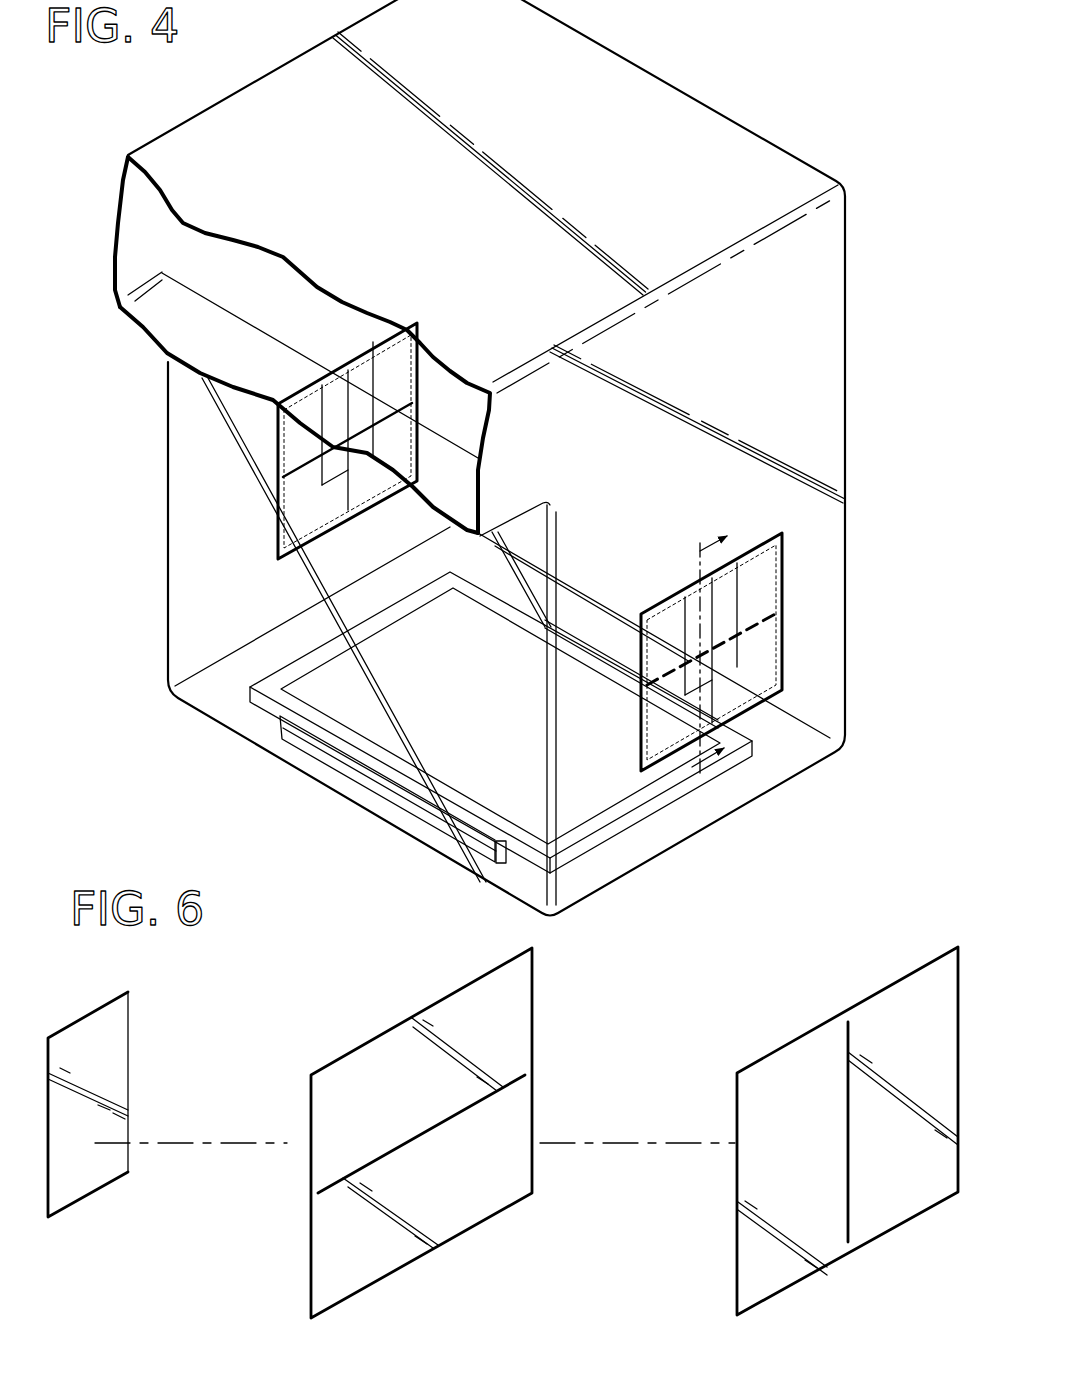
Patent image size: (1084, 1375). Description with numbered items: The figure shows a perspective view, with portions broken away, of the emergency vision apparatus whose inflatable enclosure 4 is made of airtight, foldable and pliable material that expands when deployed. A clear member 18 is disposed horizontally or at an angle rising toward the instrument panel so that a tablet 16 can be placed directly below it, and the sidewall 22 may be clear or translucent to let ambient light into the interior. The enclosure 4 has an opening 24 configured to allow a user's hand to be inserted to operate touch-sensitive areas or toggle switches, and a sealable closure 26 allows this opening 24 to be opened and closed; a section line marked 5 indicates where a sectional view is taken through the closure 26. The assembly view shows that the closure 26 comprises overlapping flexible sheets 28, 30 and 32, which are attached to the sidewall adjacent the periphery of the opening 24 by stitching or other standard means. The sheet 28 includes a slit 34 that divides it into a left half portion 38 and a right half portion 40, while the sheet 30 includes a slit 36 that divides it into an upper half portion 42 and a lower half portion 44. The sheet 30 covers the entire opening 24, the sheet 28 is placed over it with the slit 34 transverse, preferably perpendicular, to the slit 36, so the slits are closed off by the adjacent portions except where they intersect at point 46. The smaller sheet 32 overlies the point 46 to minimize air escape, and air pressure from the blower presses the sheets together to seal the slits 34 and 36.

In FIG. 4, the inflatable enclosure 4 is at (738, 109).
In FIG. 4, the section line 5- 5 is at (721, 657).
In FIG. 4, the tablet 16 is at (630, 842).
In FIG. 4, the clear member 18 is at (776, 760).
In FIG. 4, the sidewall 22 is at (772, 336).
In FIG. 4, the opening 24 is at (765, 563).
In FIG. 4, the sealable closure 26 is at (268, 444).
In FIG. 6, the flexible sheet 28 is at (802, 1107).
In FIG. 6, the flexible sheet 30 is at (440, 1130).
In FIG. 6, the flexible sheet 32 is at (93, 1172).
In FIG. 6, the slit 34 is at (847, 1075).
In FIG. 6, the slit 36 is at (335, 1188).
In FIG. 6, the left half portion 38 is at (758, 1233).
In FIG. 6, the right half portion 40 is at (915, 1185).
In FIG. 6, the upper half portion 42 is at (502, 1028).
In FIG. 6, the lower half portion 44 is at (512, 1130).
In FIG. 4, the intersection point 46 is at (718, 656).